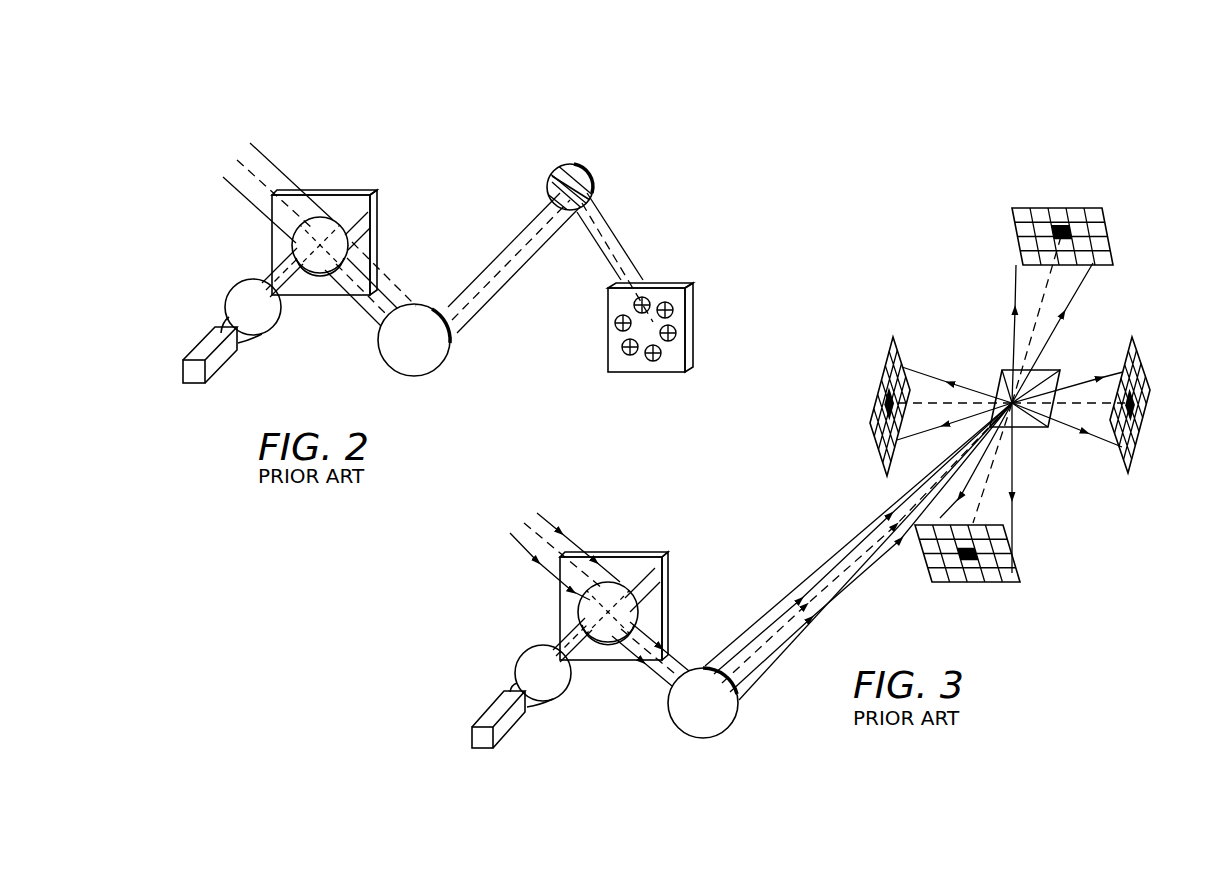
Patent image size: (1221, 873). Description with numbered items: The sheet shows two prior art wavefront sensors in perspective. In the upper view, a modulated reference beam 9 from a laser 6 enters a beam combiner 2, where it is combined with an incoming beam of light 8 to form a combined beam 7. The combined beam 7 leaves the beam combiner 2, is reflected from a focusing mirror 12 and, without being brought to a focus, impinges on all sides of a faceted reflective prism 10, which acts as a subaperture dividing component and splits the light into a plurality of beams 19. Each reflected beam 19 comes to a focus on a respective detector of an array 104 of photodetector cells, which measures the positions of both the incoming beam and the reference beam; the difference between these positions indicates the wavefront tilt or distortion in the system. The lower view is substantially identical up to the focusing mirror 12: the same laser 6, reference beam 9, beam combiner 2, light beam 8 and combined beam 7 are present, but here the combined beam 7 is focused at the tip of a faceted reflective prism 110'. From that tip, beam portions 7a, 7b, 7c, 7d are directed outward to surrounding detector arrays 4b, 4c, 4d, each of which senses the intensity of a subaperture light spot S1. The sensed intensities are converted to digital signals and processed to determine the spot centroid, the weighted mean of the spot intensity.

In FIG. 2, the beam combiner 2 is at (322, 192).
In FIG. 3, the beam combiner 2 is at (667, 553).
In FIG. 2, the laser 6 is at (183, 381).
In FIG. 3, the laser 6 is at (472, 727).
In FIG. 2, the combined beam 7 is at (398, 283).
In FIG. 3, the combined beam 7 is at (1027, 470).
In FIG. 2, the incoming beam of light 8 is at (223, 190).
In FIG. 3, the incoming beam of light 8 is at (522, 565).
In FIG. 2, the modulated reference beam 9 is at (253, 280).
In FIG. 3, the modulated reference beam 9 is at (550, 647).
In FIG. 2, the faceted reflective prism 10 is at (578, 166).
In FIG. 2, the focusing mirror 12 is at (388, 366).
In FIG. 3, the focusing mirror 12 is at (683, 730).
In FIG. 2, the plurality of beams 19 is at (637, 260).
In FIG. 2, the array of photodetector cells 104 is at (608, 350).
In FIG. 3, the faceted reflective prism 110' is at (1078, 462).
In FIG. 3, the detector array 4b is at (1112, 255).
In FIG. 3, the detector array 4c is at (895, 343).
In FIG. 3, the detector array 4d is at (998, 582).
In FIG. 3, the beam portion 7a is at (1075, 383).
In FIG. 3, the beam portion 7b is at (1015, 283).
In FIG. 3, the beam portion 7c is at (923, 370).
In FIG. 3, the beam portion 7d is at (1012, 515).
In FIG. 3, the subaperture light spot S1 is at (1063, 235).